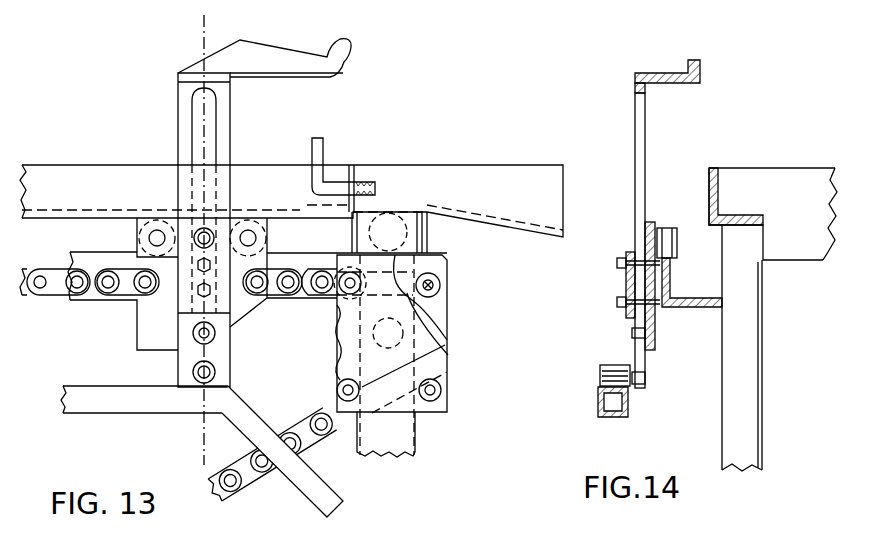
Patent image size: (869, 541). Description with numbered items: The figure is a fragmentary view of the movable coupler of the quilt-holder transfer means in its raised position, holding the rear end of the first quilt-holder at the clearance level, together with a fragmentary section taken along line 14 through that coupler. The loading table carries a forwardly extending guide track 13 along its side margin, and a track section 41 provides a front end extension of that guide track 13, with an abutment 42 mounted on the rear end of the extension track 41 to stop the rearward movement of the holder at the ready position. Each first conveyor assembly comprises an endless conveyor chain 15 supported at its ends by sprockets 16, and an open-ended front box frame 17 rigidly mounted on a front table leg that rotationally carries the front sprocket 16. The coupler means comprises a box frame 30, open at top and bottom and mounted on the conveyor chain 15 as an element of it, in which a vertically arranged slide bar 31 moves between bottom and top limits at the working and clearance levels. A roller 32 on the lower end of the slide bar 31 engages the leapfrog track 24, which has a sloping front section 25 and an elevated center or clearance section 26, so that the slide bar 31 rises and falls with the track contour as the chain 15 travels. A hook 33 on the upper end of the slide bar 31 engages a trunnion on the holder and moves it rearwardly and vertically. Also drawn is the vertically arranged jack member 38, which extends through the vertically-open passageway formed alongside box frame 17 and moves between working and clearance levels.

In FIG. 13, the guide track 13 is at (92, 194).
In FIG. 14, the guide track 13 is at (708, 185).
In FIG. 13, the section line 14— 14 is at (204, 15).
In FIG. 13, the endless conveyor chain 15 is at (56, 300).
In FIG. 13, the sprocket 16 is at (333, 358).
In FIG. 13, the front box frame 17 is at (447, 262).
In FIG. 14, the track 24 is at (588, 422).
In FIG. 13, the front section 25 is at (306, 496).
In FIG. 13, the center section 26 is at (78, 418).
In FIG. 13, the box frame 30 is at (143, 322).
In FIG. 14, the box frame 30 is at (626, 283).
In FIG. 13, the slide bar 31 is at (180, 115).
In FIG. 14, the slide bar 31 is at (641, 134).
In FIG. 13, the roller 32 is at (214, 371).
In FIG. 14, the roller 32 is at (614, 366).
In FIG. 13, the hook 33 is at (345, 51).
In FIG. 13, the jack member 38 is at (402, 428).
In FIG. 13, the track section 41 is at (555, 196).
In FIG. 13, the abutment 42 is at (312, 150).